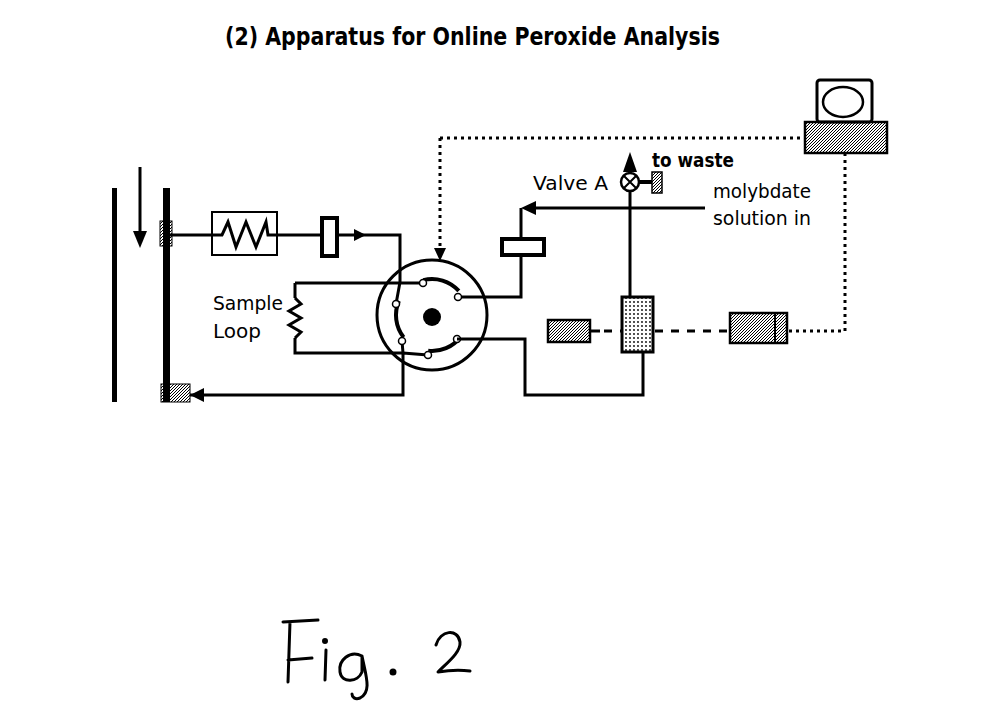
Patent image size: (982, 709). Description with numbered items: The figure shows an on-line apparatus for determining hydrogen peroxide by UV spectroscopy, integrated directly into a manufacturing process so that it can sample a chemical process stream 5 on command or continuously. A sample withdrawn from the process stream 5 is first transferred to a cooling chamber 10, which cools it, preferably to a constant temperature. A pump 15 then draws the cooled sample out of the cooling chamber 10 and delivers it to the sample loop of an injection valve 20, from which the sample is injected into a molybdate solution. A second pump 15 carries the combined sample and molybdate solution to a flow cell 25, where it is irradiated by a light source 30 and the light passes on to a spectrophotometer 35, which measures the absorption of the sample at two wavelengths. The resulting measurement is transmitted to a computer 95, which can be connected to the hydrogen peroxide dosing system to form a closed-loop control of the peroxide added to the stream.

The chemical process stream 5 is at (130, 197).
The cooling chamber 10 is at (283, 208).
The pump 15 is at (512, 230).
The injection valve 20 is at (415, 373).
The flow cell 25 is at (635, 290).
The light source 30 is at (565, 342).
The spectrophotometer 35 is at (750, 307).
The computer 95 is at (847, 80).